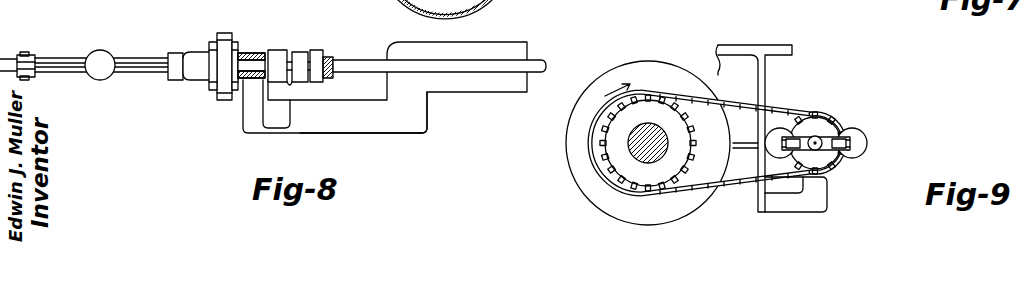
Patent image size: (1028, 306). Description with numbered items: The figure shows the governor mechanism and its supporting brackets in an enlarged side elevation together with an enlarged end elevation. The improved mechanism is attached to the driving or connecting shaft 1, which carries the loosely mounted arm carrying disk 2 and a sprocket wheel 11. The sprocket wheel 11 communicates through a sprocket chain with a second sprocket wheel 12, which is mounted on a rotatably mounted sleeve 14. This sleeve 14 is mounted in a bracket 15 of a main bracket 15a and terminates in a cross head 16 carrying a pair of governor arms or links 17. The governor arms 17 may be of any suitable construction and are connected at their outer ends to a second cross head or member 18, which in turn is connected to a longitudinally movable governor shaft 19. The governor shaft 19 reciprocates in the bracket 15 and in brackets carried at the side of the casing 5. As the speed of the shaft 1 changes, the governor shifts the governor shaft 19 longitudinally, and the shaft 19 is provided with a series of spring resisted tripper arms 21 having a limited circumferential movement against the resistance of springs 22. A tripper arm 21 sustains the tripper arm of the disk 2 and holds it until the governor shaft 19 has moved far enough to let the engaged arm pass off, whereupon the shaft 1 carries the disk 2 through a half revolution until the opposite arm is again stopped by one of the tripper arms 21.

In FIG. 9, the driving or connecting shaft 1 is at (632, 138).
In FIG. 9, the arm carrying disk 2 is at (610, 80).
In FIG. 9, the casing 5 is at (745, 74).
In FIG. 9, the sprocket wheel 11 is at (598, 147).
In FIG. 8, the second sprocket wheel 12 is at (218, 33).
In FIG. 9, the second sprocket wheel 12 is at (832, 127).
In FIG. 8, the rotatably mounted sleeve 14 is at (258, 52).
In FIG. 8, the bracket 15 is at (255, 112).
In FIG. 8, the main bracket 15a is at (383, 122).
In FIG. 9, the main bracket 15a is at (816, 196).
In FIG. 8, the cross head 16 is at (172, 53).
In FIG. 8, the governor arms or links 17 is at (134, 70).
In FIG. 9, the governor arms or links 17 is at (850, 146).
In FIG. 8, the second cross head 18 is at (28, 55).
In FIG. 9, the second cross head 18 is at (840, 158).
In FIG. 8, the governor shaft 19 is at (534, 59).
In FIG. 9, the governor shaft 19 is at (816, 136).
In FIG. 8, the tripper arms 21 is at (322, 56).
In FIG. 8, the springs 22 is at (290, 82).